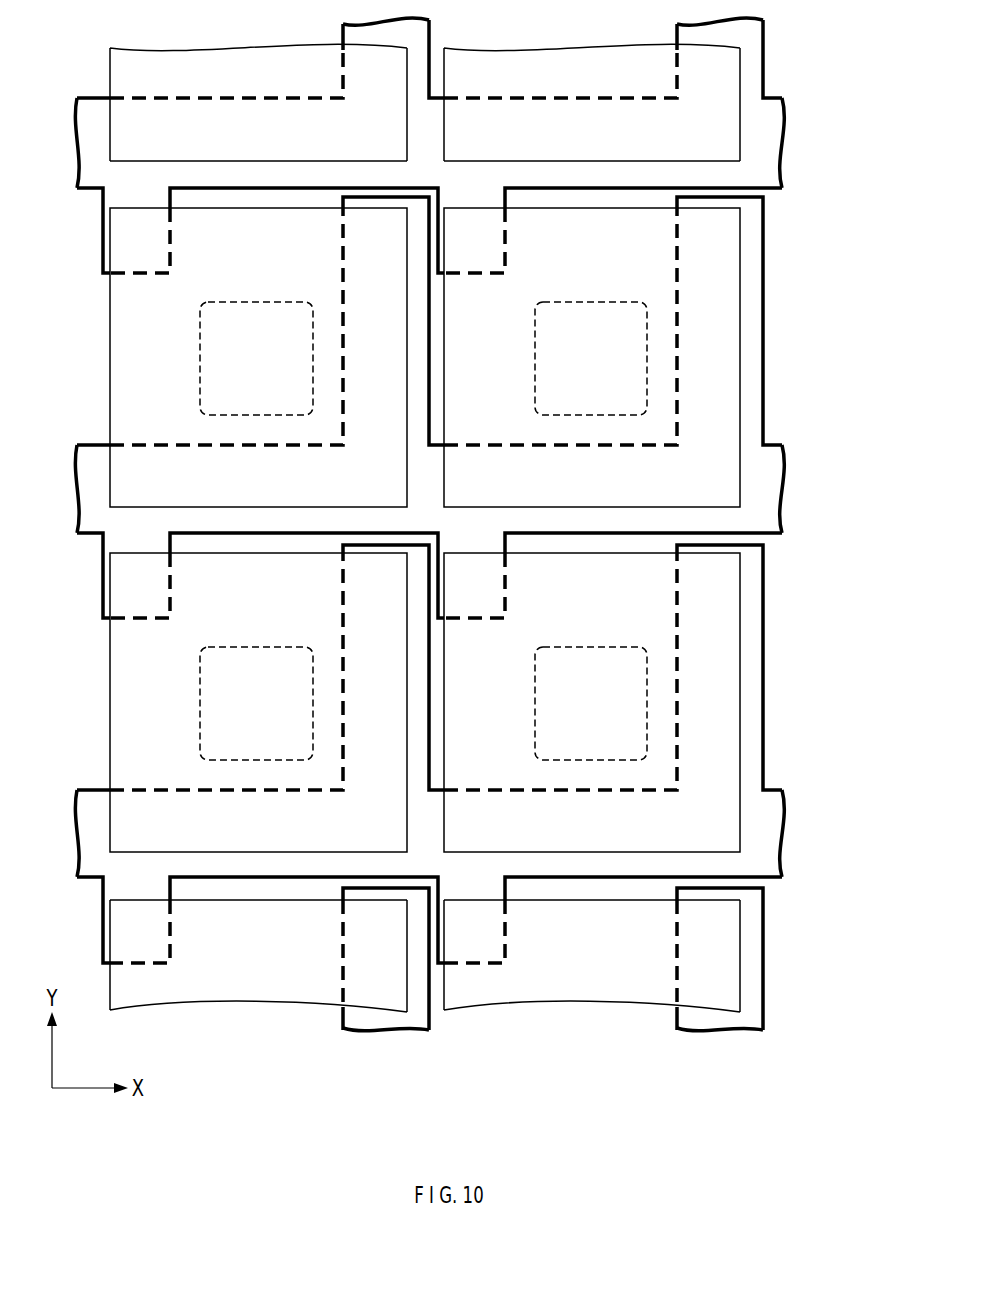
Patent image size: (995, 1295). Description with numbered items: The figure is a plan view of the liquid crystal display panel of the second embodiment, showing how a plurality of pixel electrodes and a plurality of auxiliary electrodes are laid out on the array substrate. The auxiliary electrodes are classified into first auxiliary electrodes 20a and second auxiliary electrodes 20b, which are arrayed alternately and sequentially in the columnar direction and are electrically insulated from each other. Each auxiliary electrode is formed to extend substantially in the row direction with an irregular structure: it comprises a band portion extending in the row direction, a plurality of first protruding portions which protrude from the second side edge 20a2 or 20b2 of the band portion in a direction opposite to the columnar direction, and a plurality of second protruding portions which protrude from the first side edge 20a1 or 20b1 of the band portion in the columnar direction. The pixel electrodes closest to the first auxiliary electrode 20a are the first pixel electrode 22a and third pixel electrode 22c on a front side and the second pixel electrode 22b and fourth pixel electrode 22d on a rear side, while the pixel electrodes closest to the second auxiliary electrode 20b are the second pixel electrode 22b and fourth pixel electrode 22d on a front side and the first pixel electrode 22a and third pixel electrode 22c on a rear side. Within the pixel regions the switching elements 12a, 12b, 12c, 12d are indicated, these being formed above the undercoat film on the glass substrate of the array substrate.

The switching element 12a is at (262, 302).
The switching element 12b is at (262, 647).
The switching element 12c is at (597, 302).
The switching element 12d is at (597, 647).
The first auxiliary electrode 20a is at (468, 614).
The first side edge 20a1 is at (768, 444).
The second side edge 20a2 is at (768, 537).
The second auxiliary electrode 20b is at (468, 490).
The first side edge 20b1 is at (768, 97).
The second side edge 20b2 is at (768, 192).
The first pixel electrode 22a is at (109, 352).
The second pixel electrode 22b is at (272, 48).
The third pixel electrode 22c is at (740, 350).
The fourth pixel electrode 22d is at (597, 48).